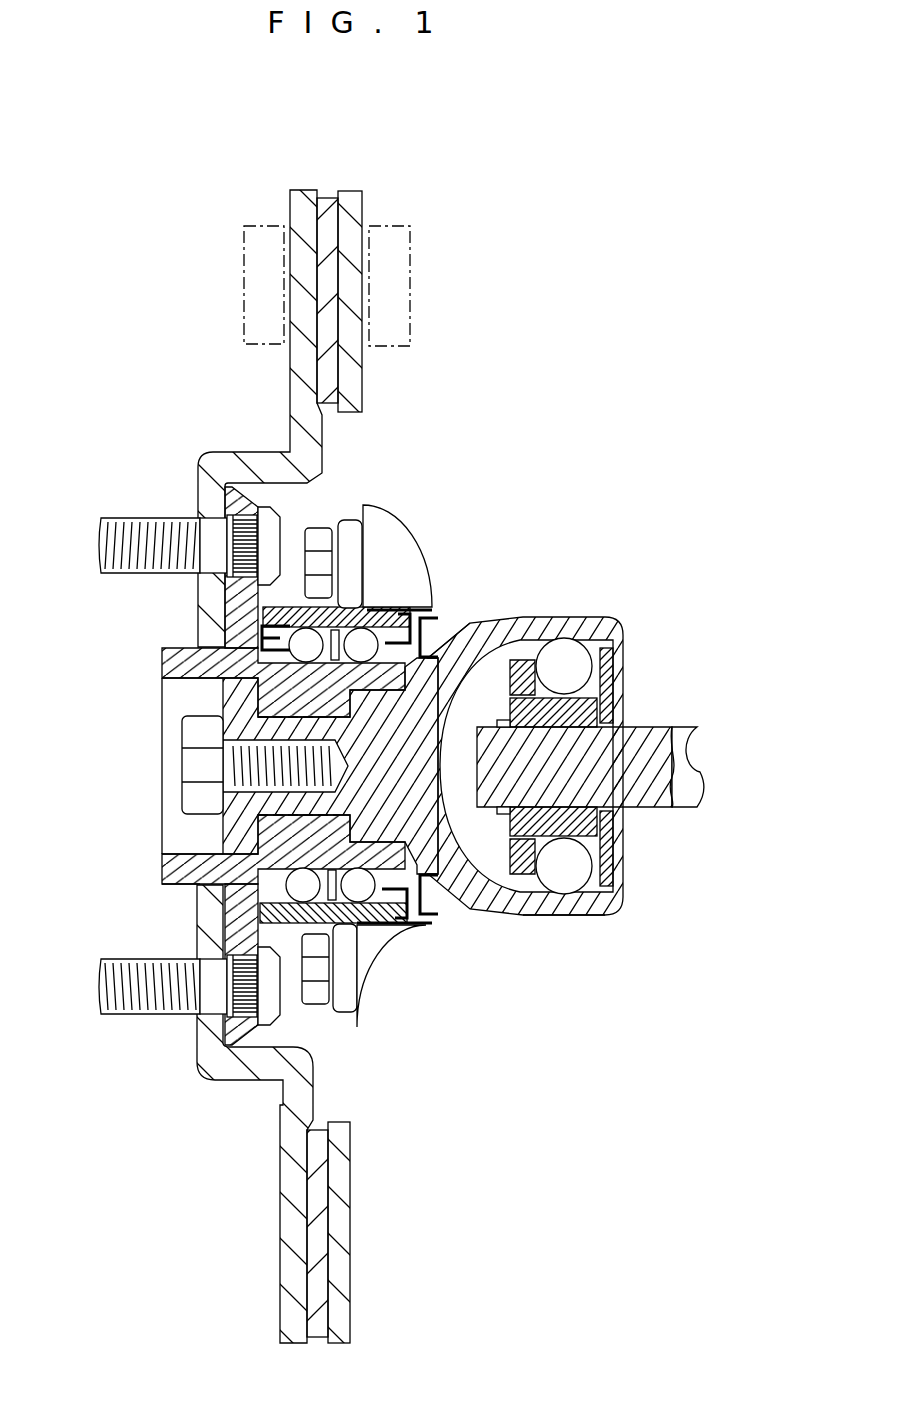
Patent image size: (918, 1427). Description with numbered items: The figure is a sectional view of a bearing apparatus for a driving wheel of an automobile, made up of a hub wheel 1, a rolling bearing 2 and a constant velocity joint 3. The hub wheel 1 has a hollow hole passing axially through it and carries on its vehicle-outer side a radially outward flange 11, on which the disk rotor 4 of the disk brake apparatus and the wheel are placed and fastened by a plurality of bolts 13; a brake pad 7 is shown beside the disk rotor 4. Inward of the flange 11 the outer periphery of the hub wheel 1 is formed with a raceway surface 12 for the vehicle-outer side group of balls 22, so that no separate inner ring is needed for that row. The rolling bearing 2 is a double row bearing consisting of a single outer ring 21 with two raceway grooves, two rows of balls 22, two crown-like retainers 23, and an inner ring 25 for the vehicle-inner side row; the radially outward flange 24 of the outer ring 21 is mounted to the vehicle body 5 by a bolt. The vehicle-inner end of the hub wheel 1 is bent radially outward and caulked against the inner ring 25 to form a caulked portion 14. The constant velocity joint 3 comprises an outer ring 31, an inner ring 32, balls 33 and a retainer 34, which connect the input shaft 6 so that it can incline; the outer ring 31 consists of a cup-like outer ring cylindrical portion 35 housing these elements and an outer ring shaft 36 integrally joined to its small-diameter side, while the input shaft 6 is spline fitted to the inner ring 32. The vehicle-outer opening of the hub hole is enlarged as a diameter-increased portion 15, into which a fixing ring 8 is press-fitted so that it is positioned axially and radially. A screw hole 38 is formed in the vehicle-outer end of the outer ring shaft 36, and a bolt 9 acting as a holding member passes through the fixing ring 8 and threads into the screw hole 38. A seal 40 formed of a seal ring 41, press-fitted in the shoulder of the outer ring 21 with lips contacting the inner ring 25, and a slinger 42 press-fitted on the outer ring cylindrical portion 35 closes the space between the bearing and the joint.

The hub wheel 1 is at (396, 781).
The rolling bearing 2 is at (295, 598).
The constant velocity joint 3 is at (557, 741).
The disk rotor 4 is at (309, 192).
The vehicle body 5 is at (383, 538).
The input shaft 6 is at (687, 785).
The brake pad 7 is at (398, 226).
The fixing ring 8 is at (210, 698).
The bolt 9 is at (193, 775).
The flange 11 is at (236, 603).
The raceway surface 12 is at (255, 660).
The bolts 13 is at (140, 522).
The caulked portion 14 is at (443, 643).
The diameter-increased portion 15 is at (193, 852).
The outer ring 21 is at (340, 655).
The balls 22 is at (262, 635).
The crown-like retainers 23 is at (350, 603).
The radially outward flange 24 is at (350, 527).
The inner ring 25 is at (430, 617).
The outer ring 31 is at (598, 622).
The inner ring 32 is at (572, 708).
The balls 33 is at (577, 657).
The retainer 34 is at (595, 658).
The outer ring cylindrical portion 35 is at (565, 916).
The outer ring shaft 36 is at (430, 893).
The screw hole 38 is at (273, 750).
The seal 40 is at (418, 1115).
The seal ring 41 is at (415, 925).
The slinger 42 is at (436, 905).